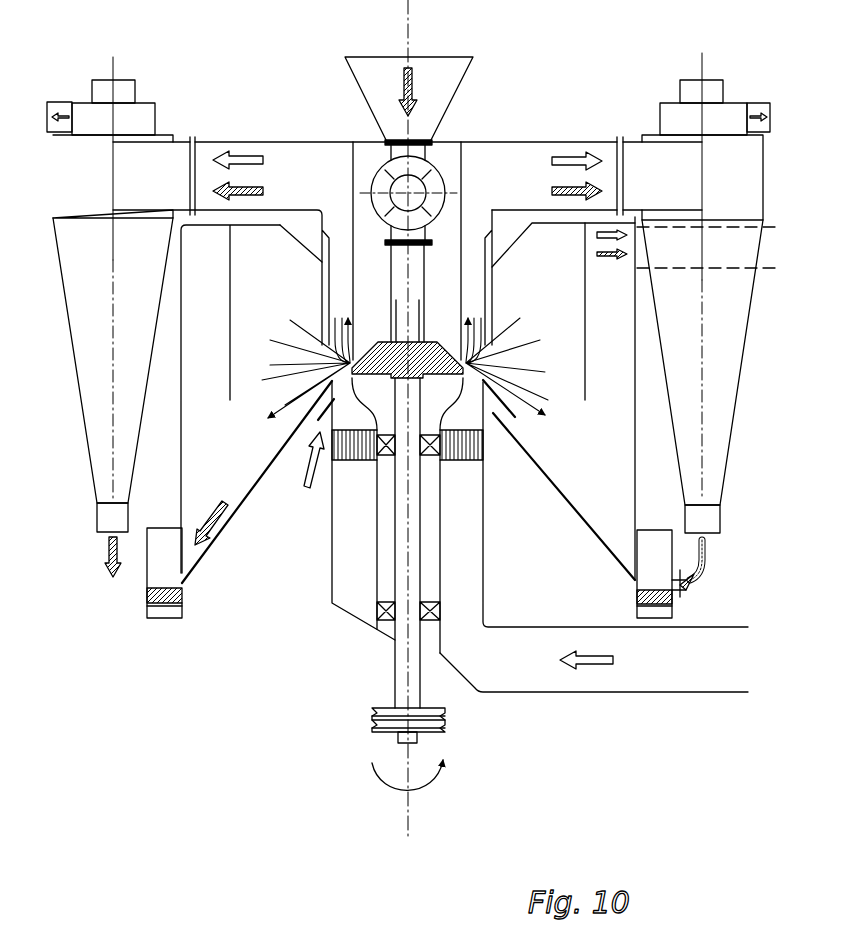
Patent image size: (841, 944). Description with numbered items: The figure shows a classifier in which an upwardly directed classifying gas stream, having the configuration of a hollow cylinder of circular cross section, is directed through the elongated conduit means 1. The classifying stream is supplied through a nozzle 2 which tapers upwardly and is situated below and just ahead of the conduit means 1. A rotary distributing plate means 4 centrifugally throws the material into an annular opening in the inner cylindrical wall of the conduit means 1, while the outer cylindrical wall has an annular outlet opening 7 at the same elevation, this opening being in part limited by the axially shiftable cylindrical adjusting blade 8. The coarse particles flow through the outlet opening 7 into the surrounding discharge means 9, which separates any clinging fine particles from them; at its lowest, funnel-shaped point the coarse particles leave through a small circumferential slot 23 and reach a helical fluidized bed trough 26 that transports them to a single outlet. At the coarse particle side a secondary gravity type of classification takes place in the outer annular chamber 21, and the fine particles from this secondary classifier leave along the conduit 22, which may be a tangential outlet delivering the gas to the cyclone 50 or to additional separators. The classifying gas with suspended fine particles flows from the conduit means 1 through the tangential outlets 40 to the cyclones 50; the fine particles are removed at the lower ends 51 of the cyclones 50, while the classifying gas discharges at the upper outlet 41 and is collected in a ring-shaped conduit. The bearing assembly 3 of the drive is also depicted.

The elongated conduit means 1 is at (472, 193).
The nozzle 2 is at (458, 413).
The bearing assembly 3 is at (472, 443).
The rotary distributing plate means 4 is at (375, 340).
The outlet opening 7 is at (307, 365).
The axially shiftable cylindrical adjusting blade 8 is at (488, 275).
The discharge means 9 is at (278, 265).
The outer annular chamber 21 is at (203, 268).
The conduit 22 is at (623, 245).
The circumferential slot 23 is at (637, 580).
The fluidized bed trough 26 is at (158, 553).
The tangential outlets 40 is at (535, 172).
The upper outlet 41 is at (755, 108).
The cyclone 50 is at (88, 165).
The lower ends 51 is at (715, 540).